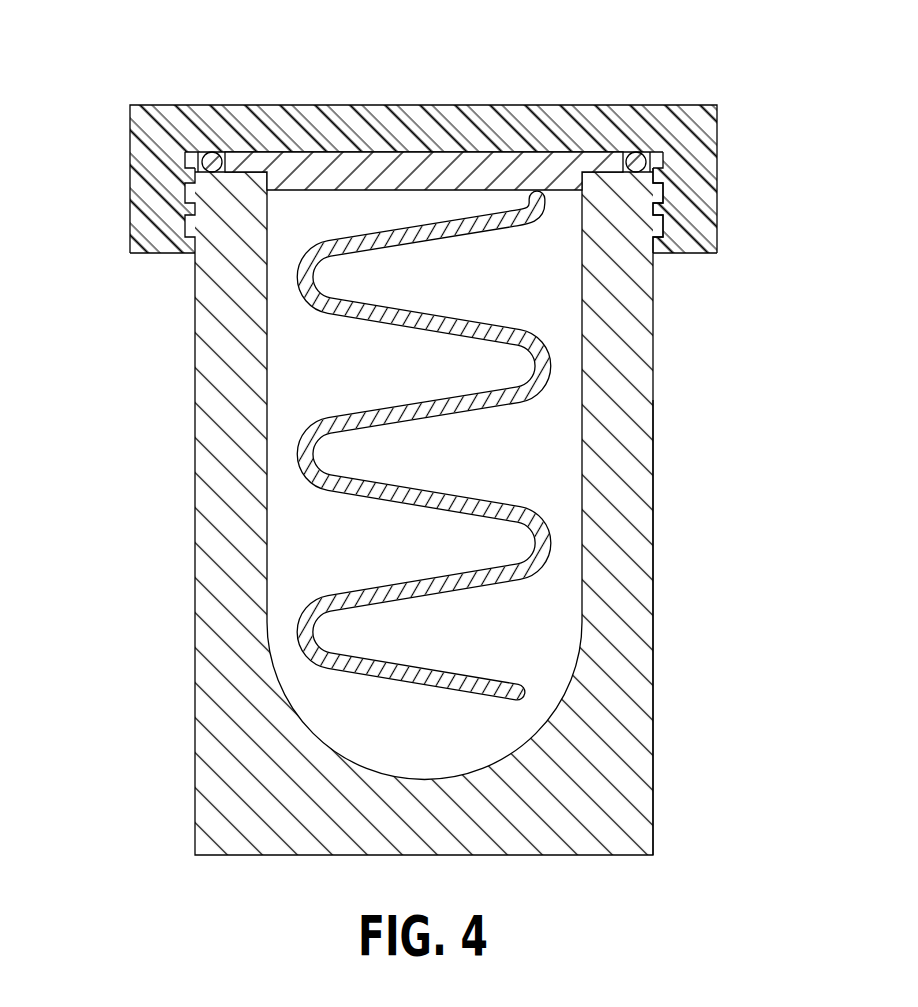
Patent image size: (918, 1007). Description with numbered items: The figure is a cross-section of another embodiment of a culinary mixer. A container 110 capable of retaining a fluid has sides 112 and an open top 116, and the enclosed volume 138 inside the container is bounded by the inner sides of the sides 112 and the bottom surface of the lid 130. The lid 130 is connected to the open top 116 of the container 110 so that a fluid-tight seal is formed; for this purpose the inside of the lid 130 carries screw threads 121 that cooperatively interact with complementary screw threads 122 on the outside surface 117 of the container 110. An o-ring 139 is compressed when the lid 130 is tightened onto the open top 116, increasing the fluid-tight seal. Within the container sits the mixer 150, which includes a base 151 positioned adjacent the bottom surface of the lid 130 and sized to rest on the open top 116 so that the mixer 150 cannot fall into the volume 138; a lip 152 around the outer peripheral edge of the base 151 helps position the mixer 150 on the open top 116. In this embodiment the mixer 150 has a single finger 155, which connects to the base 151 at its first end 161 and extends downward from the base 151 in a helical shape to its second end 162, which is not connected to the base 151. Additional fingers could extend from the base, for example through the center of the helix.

The container 110 is at (655, 430).
The sides 112 is at (637, 555).
The open top 116 is at (657, 150).
The outside surface 117 is at (656, 671).
The screw threads 121 is at (192, 207).
The complementary screw threads 122 is at (654, 249).
The lid 130 is at (497, 118).
The enclosed volume 138 is at (309, 545).
The o-ring 139 is at (212, 151).
The mixer 150 is at (309, 316).
The base 151 is at (322, 164).
The lip 152 is at (256, 186).
The finger 155 is at (442, 243).
The first end 161 is at (547, 194).
The second end 162 is at (527, 691).